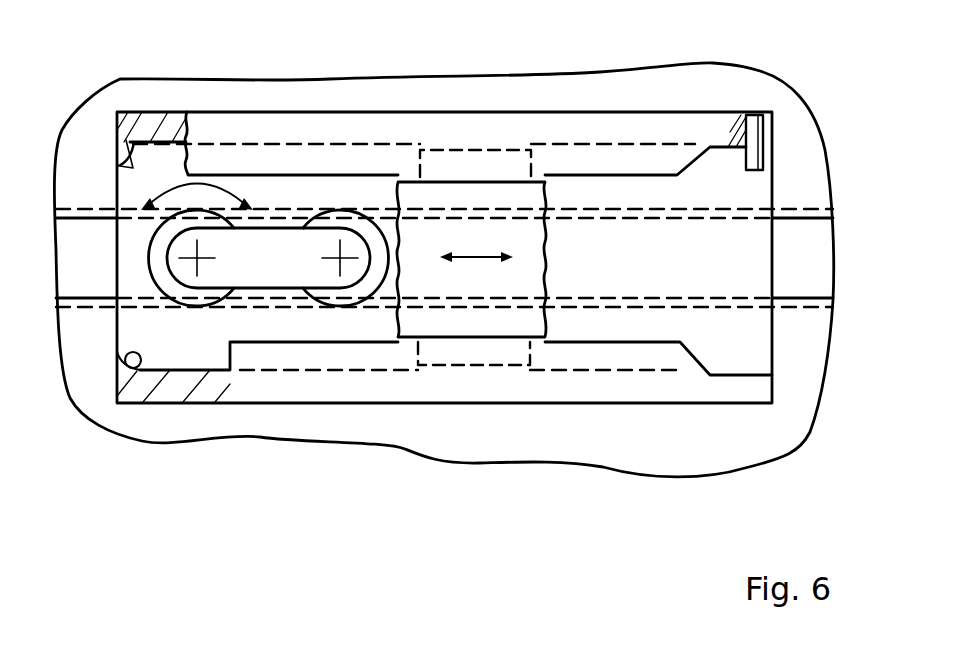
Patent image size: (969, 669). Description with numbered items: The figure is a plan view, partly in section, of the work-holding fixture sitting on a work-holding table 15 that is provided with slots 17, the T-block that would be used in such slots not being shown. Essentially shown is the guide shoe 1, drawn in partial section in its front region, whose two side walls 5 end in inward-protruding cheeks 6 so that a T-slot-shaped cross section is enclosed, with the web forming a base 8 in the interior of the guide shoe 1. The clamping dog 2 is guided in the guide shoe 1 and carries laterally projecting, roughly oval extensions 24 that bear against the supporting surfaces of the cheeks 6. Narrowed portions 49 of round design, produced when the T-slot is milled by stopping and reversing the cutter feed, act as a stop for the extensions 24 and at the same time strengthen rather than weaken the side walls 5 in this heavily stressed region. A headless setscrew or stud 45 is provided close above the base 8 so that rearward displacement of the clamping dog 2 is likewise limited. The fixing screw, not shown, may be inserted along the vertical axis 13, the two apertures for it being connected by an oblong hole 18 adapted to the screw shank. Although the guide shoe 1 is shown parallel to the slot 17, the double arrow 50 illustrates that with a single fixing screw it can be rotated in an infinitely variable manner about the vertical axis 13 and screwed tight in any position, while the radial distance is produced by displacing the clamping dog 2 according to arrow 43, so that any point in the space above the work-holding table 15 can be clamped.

The guide shoe 1 is at (534, 138).
The clamping dog 2 is at (487, 196).
The side walls 5 is at (570, 137).
The cheeks 6 is at (607, 170).
The base 8 is at (738, 197).
The vertical axis 13 is at (197, 258).
The work-holding table 15 is at (788, 390).
The slots 17 is at (801, 262).
The oblong hole 18 is at (263, 287).
The extensions 24 is at (452, 177).
The arrow 43 is at (478, 258).
The stud 45 is at (755, 170).
The narrowed portions 49 is at (123, 167).
The double arrow 50 is at (200, 186).